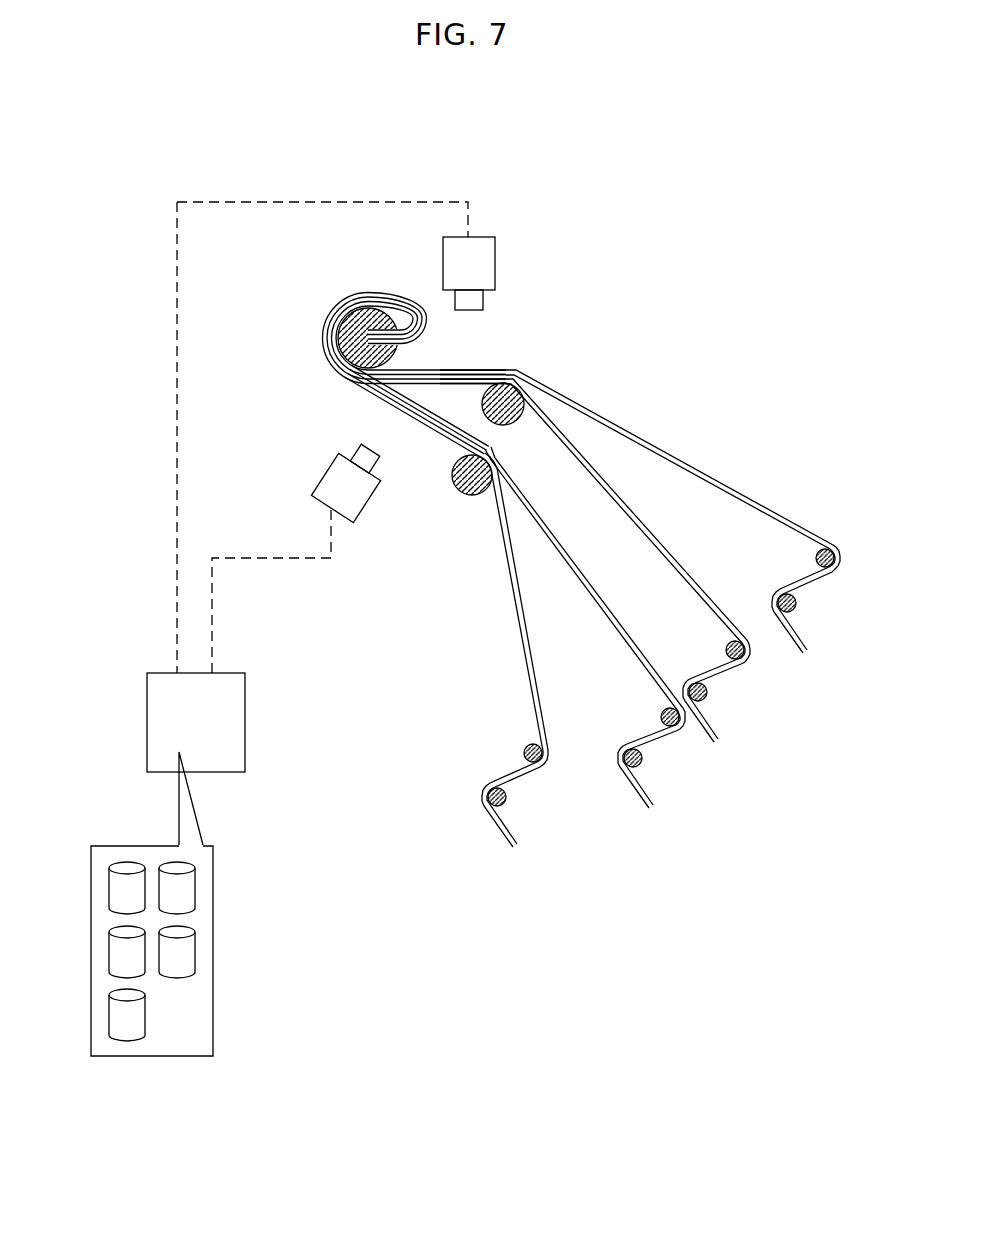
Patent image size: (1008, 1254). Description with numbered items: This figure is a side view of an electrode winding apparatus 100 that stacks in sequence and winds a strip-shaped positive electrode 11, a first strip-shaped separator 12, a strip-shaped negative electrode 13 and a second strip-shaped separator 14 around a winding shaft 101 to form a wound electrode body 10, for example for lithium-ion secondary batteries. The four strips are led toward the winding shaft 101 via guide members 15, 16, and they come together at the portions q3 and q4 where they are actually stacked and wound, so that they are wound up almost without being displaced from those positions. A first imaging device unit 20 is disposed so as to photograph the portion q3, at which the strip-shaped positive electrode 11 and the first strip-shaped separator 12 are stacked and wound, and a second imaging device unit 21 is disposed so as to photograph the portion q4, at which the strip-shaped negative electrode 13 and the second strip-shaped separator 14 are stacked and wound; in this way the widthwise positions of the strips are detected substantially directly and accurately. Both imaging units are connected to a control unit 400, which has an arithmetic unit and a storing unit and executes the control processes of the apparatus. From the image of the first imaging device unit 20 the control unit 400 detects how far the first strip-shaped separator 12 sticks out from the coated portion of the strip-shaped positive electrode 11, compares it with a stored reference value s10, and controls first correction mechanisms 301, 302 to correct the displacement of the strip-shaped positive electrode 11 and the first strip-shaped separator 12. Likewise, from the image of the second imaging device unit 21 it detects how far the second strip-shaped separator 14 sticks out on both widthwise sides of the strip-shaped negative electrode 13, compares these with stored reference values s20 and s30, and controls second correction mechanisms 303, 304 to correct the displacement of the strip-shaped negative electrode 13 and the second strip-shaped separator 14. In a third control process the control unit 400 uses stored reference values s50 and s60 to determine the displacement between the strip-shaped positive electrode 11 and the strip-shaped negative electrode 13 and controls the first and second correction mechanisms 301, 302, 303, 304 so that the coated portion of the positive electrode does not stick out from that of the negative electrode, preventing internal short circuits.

The electrode winding apparatus 100 is at (511, 217).
The wound electrode body 10 is at (324, 299).
The winding shaft 101 is at (346, 336).
The first imaging device unit 20 is at (495, 263).
The second imaging device unit 21 is at (362, 510).
The portion at which the positive electrode and first separator are stacked and woun q3 is at (470, 358).
The portion at which the negative electrode and second separator are stacked and wou q4 is at (415, 440).
The guide member 15 is at (516, 389).
The guide member 16 is at (469, 481).
The strip-shaped positive electrode 11 is at (764, 505).
The first strip-shaped separator 12 is at (704, 585).
The strip-shaped negative electrode 13 is at (651, 660).
The second strip-shaped separator 14 is at (544, 712).
The first correction mechanism 301 is at (839, 544).
The first correction mechanism 302 is at (754, 662).
The second correction mechanism 303 is at (692, 730).
The second correction mechanism 304 is at (558, 765).
The control unit 400 is at (146, 716).
The reference value s10 is at (110, 889).
The reference value s20 is at (110, 953).
The reference value s30 is at (110, 1018).
The reference value s50 is at (195, 889).
The reference value s60 is at (195, 953).